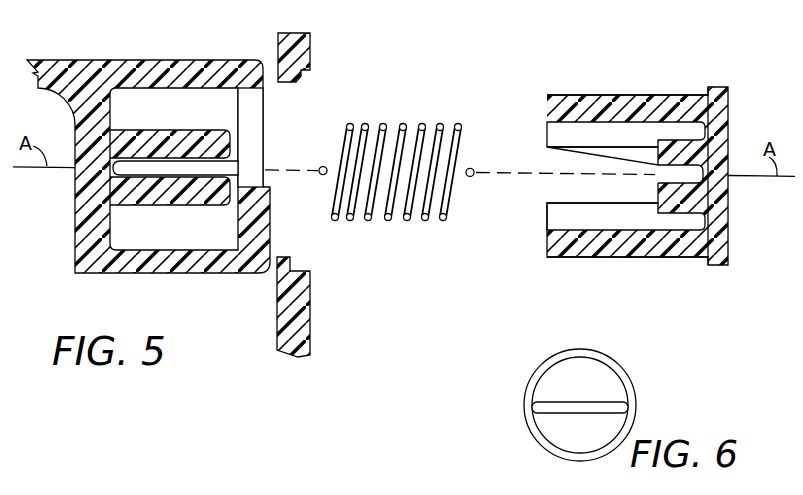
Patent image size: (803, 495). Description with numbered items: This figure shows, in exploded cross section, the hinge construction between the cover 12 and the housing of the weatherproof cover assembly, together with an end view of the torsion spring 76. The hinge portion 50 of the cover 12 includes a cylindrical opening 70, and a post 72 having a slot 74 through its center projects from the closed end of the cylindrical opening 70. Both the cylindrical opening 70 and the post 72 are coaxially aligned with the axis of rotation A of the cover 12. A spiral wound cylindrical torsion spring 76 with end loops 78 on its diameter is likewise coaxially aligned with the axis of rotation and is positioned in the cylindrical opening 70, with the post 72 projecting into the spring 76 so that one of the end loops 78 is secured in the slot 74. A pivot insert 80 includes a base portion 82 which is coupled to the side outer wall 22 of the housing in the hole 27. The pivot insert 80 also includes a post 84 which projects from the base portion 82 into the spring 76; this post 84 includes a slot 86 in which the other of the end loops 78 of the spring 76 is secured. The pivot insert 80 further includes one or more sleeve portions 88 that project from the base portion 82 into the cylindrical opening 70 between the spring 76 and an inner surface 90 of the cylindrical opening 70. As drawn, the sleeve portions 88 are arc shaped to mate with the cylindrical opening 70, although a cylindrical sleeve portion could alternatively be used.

In FIG. 5, the cover 12 is at (146, 161).
In FIG. 5, the side outer wall 22 is at (313, 69).
In FIG. 5, the hole 27 is at (306, 144).
In FIG. 5, the hinge portion 50 is at (146, 161).
In FIG. 5, the cylindrical opening 70 is at (172, 97).
In FIG. 5, the post 72 is at (218, 128).
In FIG. 5, the slot 74 is at (150, 170).
In FIG. 5, the torsion spring 76 is at (383, 127).
In FIG. 6, the torsion spring 76 is at (614, 357).
In FIG. 5, the end loops 78 is at (323, 177).
In FIG. 6, the end loops 78 is at (602, 418).
In FIG. 5, the pivot insert 80 is at (663, 165).
In FIG. 5, the base portion 82 is at (728, 128).
In FIG. 5, the post 84 is at (667, 138).
In FIG. 5, the slot 86 is at (663, 180).
In FIG. 5, the sleeve portions 88 is at (588, 95).
In FIG. 5, the inner surface 90 is at (218, 90).